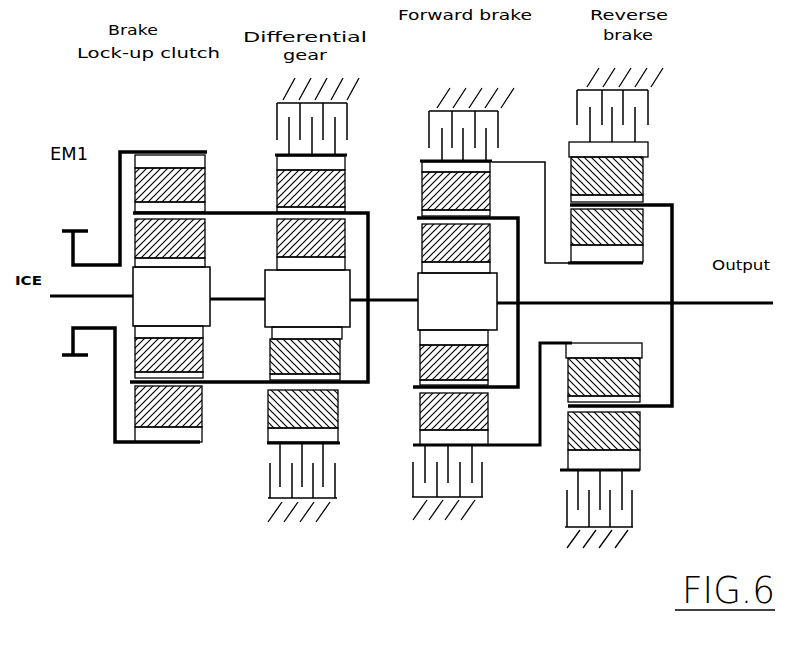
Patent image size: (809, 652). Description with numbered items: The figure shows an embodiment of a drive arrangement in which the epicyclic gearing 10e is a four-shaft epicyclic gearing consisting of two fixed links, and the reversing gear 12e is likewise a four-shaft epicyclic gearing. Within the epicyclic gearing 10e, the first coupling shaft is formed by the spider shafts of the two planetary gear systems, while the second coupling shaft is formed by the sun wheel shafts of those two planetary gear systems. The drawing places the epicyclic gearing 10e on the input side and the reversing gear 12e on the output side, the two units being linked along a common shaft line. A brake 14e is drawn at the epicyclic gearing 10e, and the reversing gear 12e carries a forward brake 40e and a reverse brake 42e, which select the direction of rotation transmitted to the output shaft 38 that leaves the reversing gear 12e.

The epicyclic gearing 10e is at (330, 520).
The reversing gear 12e is at (632, 550).
The differential gear brake 14e is at (270, 480).
The output shaft 38 is at (725, 307).
The forward brake 40e is at (413, 485).
The reverse brake 42e is at (637, 500).